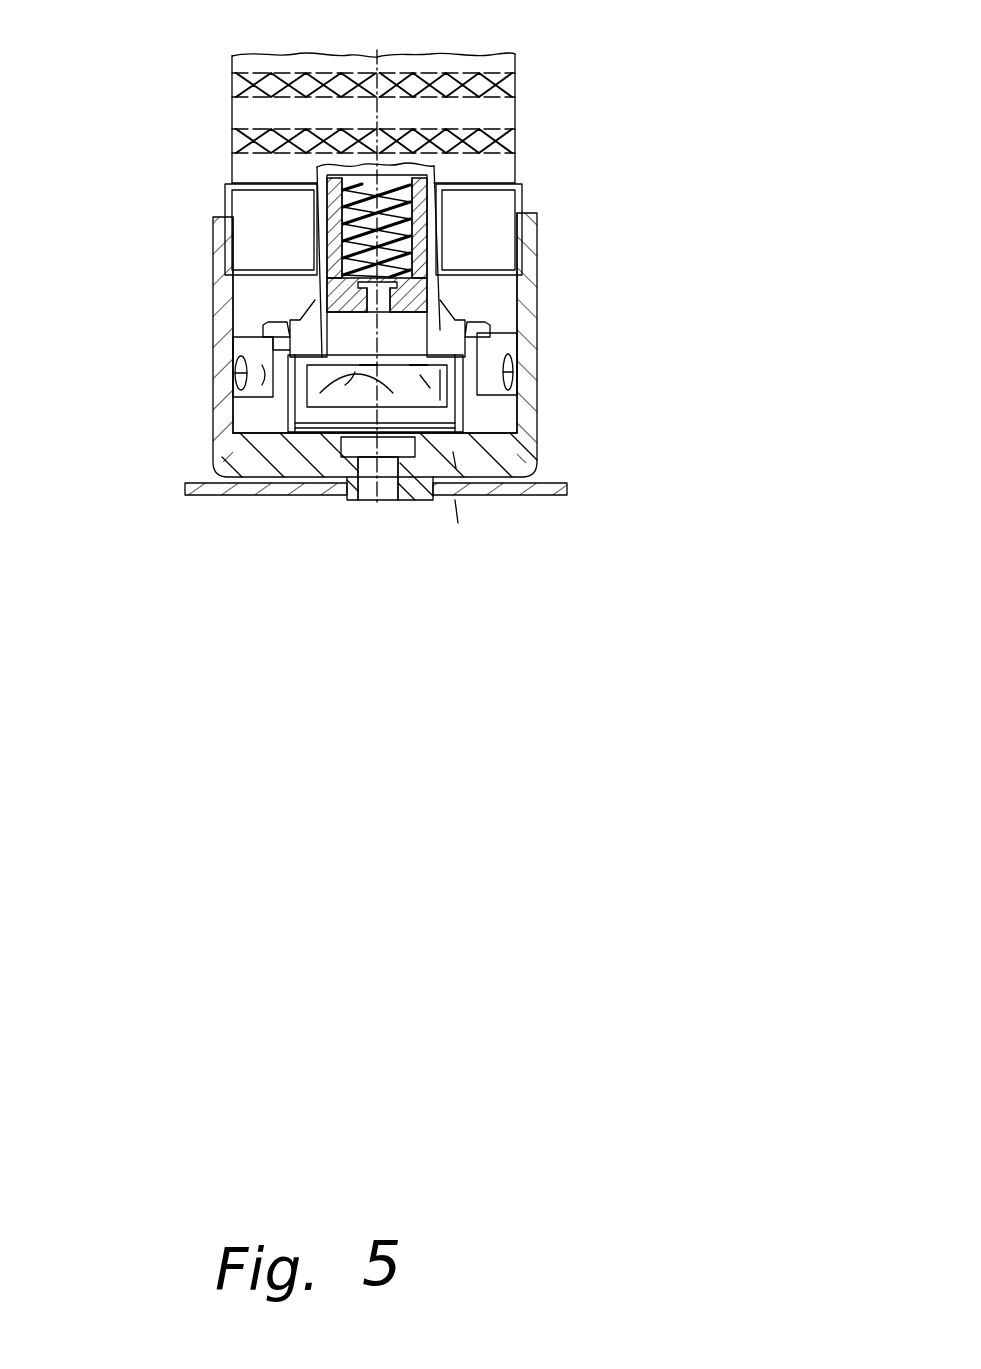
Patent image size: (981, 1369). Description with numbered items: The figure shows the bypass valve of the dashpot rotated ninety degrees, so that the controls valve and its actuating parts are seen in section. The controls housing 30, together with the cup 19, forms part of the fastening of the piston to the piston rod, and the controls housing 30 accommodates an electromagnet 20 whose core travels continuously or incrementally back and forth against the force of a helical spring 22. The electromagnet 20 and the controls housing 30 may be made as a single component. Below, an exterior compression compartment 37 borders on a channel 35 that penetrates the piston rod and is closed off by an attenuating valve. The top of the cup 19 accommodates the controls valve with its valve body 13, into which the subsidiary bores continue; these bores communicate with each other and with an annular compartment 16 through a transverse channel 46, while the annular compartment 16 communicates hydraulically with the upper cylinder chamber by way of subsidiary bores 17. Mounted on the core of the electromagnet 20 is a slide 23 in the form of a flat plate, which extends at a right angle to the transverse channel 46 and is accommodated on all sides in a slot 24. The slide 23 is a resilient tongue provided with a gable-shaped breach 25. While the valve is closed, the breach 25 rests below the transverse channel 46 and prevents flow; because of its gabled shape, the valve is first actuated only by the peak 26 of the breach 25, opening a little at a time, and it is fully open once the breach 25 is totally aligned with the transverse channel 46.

The electromagnet 20 is at (480, 110).
The valve body 13 is at (440, 210).
The helical spring 22 is at (317, 230).
The controls housing 30 is at (492, 235).
The compression compartment 37 is at (377, 335).
The slide 23 is at (327, 352).
The slot 24 is at (442, 350).
The subsidiary bores 17 is at (240, 376).
The annular compartment 16 is at (280, 397).
The peak 26 is at (322, 380).
The breach 25 is at (362, 398).
The channel 35 is at (400, 500).
The transverse channel 46 is at (473, 547).
The cup 19 is at (522, 470).